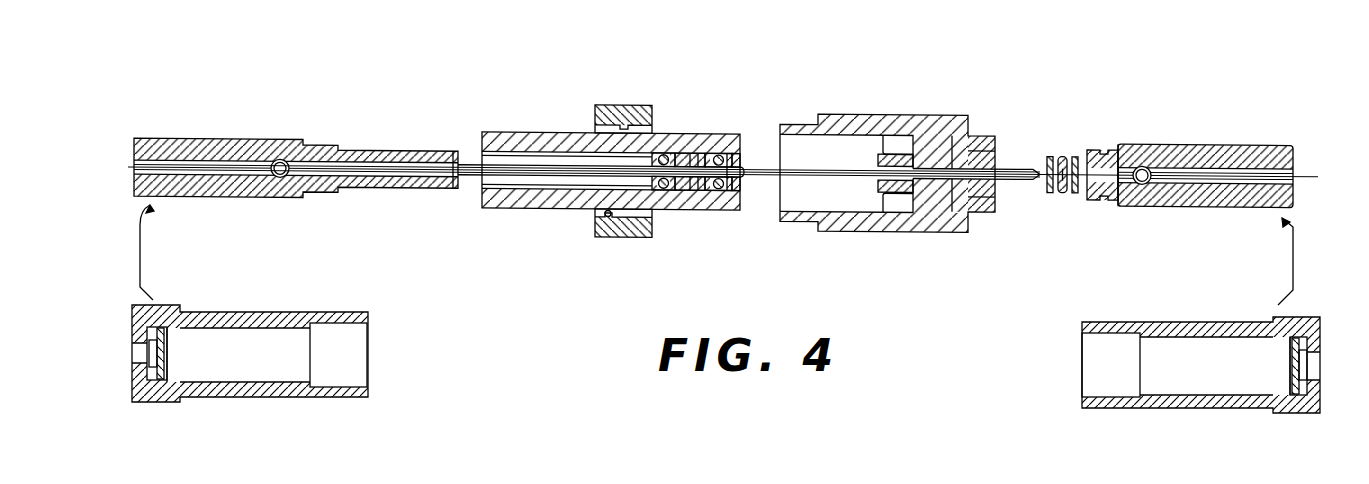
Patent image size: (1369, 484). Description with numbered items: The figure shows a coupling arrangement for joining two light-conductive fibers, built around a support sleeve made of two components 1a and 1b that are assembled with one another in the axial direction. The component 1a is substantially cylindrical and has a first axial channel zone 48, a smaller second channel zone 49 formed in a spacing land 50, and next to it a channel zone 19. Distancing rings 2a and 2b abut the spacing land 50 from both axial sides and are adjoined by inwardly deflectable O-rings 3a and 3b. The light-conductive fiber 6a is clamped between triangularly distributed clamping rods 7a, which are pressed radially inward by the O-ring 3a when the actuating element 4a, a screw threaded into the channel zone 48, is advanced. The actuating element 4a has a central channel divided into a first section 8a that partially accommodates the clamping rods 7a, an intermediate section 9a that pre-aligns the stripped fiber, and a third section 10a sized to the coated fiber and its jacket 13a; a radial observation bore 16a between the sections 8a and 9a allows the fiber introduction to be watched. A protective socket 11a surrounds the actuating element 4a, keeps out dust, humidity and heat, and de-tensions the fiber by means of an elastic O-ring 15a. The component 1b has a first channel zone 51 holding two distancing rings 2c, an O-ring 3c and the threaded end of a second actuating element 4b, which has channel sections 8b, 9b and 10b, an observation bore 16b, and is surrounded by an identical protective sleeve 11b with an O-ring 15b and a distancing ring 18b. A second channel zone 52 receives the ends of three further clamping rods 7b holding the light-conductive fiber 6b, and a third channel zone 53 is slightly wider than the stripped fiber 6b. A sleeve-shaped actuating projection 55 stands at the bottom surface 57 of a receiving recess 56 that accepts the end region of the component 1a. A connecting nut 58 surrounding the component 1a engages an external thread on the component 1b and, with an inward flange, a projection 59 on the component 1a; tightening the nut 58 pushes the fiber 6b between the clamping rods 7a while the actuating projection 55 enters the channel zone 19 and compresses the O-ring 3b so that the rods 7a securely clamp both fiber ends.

The support sleeve component 1a is at (540, 134).
The support sleeve component 1b is at (848, 116).
The distancing ring 2a is at (673, 188).
The distancing ring 2b is at (718, 201).
The distancing ring 2c is at (1048, 188).
The O-ring 3a is at (668, 152).
The O-ring 3b is at (723, 129).
The O-ring 3c is at (1060, 188).
The actuating element 4a is at (222, 103).
The actuating element 4b is at (1250, 135).
The light-conductive fiber 6a is at (466, 161).
The light-conductive fiber 6b is at (1087, 184).
The clamping rod 7a is at (503, 171).
The clamping rod 7b is at (1023, 158).
The first channel section 8a is at (397, 170).
The first channel section 8b is at (1130, 134).
The second channel section 9a is at (263, 170).
The second channel section 9b is at (1158, 174).
The third channel section 10a is at (168, 186).
The third channel section 10b is at (1235, 173).
The protective socket 11a is at (242, 397).
The protective sleeve 11b is at (1178, 400).
The jacket 13a is at (168, 342).
The O-ring 15a is at (132, 383).
The O-ring 15b is at (1273, 408).
The observation bore 16a is at (285, 150).
The observation bore 16b is at (1155, 152).
The distancing ring 18b is at (1290, 345).
The channel zone 19 is at (727, 154).
The first axial channel zone 48 is at (573, 178).
The second channel zone 49 is at (690, 164).
The spacing land 50 is at (698, 181).
The first channel zone 51 is at (977, 150).
The second channel zone 52 is at (942, 186).
The third channel zone 53 is at (918, 182).
The actuating projection 55 is at (883, 186).
The receiving recess 56 is at (795, 136).
The bottom surface 57 is at (910, 126).
The connecting nut 58 is at (622, 100).
The projection 59 is at (607, 208).